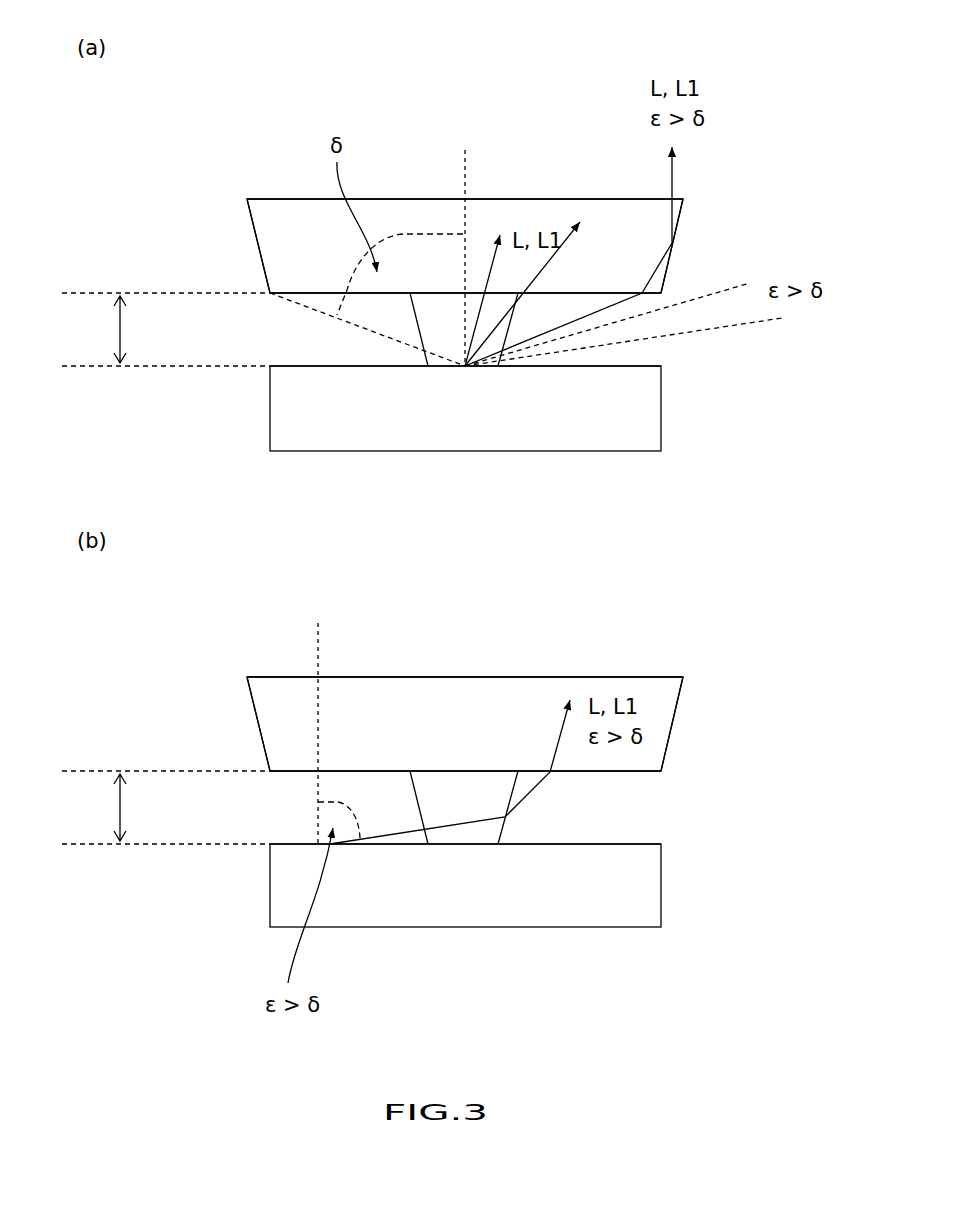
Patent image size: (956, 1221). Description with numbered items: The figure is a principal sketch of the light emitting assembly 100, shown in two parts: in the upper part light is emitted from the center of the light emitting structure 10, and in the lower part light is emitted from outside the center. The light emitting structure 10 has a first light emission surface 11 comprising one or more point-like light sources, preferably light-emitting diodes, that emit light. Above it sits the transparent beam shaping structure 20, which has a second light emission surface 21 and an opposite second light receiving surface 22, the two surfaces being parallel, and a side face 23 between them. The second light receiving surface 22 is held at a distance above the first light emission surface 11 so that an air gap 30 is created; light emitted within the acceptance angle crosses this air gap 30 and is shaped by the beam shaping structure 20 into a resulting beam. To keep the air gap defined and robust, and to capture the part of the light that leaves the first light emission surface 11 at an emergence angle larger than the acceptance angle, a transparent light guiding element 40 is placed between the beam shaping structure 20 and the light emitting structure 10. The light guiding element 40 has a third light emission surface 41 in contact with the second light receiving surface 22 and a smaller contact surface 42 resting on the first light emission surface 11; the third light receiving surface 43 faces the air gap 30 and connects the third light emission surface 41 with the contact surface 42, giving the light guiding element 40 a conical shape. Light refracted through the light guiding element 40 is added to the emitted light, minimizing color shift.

The light emitting structure 10 is at (322, 413).
The first light emission surface 11 is at (640, 372).
The transparent beam shaping structure 20 is at (290, 232).
The second light emission surface 21 is at (570, 190).
The second light receiving surface 22 is at (320, 296).
The side face 23 is at (257, 245).
The air gap 30 is at (149, 568).
The transparent light guiding element 40 is at (490, 330).
The third light emission surface 41 is at (437, 290).
The contact surface 42 is at (445, 372).
The third light receiving surface 43 is at (415, 321).
The light emitting assembly 100 is at (282, 82).